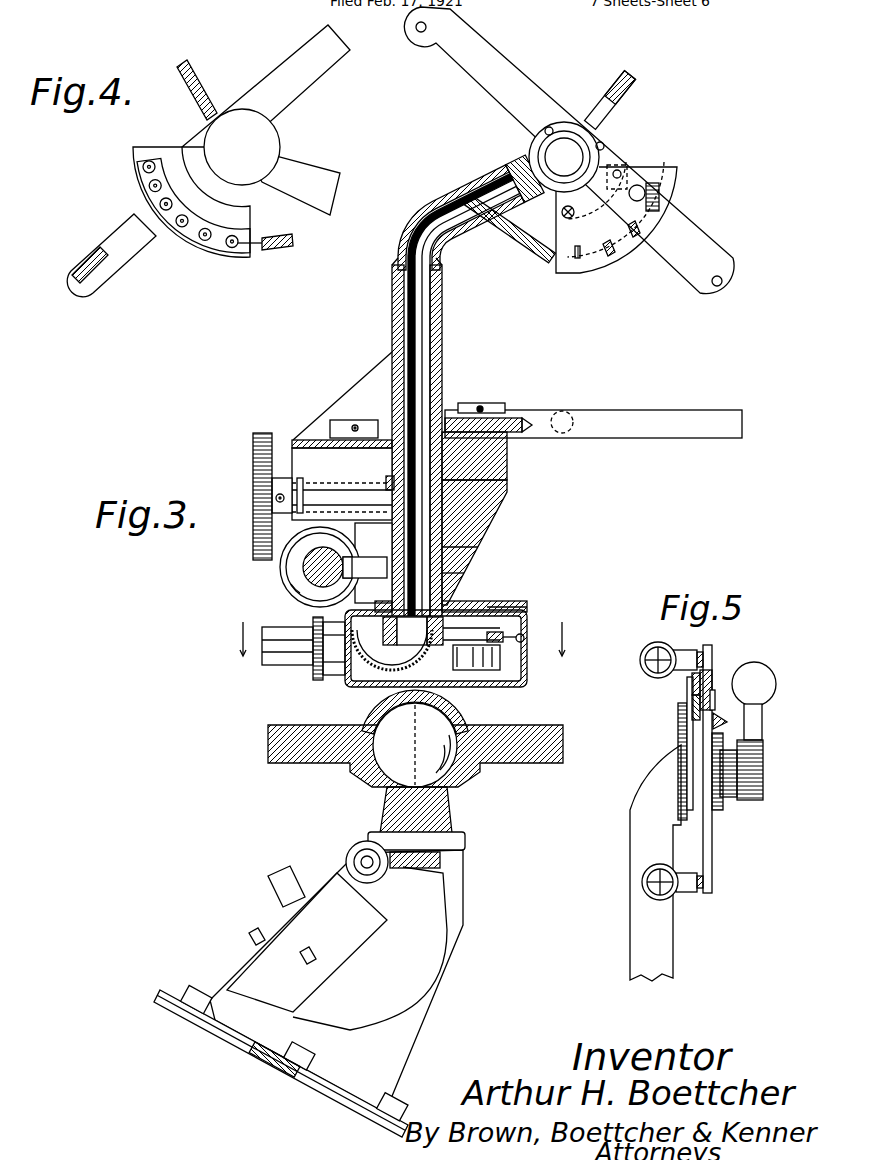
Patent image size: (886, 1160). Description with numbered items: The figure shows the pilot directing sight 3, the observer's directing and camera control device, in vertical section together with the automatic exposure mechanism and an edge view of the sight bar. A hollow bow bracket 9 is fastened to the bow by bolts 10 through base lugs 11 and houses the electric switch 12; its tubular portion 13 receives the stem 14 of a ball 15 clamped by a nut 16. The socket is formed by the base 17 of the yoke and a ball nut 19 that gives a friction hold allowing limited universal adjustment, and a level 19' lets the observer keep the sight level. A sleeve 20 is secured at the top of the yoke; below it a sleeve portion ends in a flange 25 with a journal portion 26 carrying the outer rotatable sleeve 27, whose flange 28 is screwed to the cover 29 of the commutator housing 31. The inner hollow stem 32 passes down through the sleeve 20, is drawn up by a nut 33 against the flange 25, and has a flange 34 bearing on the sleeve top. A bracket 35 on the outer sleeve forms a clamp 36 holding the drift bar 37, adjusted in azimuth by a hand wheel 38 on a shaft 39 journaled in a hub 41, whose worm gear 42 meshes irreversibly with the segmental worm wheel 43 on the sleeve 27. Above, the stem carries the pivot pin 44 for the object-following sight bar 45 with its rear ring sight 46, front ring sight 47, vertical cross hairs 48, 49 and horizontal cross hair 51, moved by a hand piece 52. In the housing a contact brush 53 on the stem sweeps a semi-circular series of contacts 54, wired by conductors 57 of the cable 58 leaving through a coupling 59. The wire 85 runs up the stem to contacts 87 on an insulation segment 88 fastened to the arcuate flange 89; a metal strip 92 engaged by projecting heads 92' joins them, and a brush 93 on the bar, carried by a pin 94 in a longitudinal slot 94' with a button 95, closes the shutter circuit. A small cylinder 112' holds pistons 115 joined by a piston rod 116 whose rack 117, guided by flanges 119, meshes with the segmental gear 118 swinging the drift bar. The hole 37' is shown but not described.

In FIG. 3, the pilot directing sight 3 is at (337, 385).
In FIG. 3, the bow bracket 9 is at (463, 930).
In FIG. 3, the bolts 10 is at (250, 1037).
In FIG. 3, the base lugs 11 is at (383, 1110).
In FIG. 3, the electric switch 12 is at (297, 932).
In FIG. 3, the tubular portion 13 is at (447, 817).
In FIG. 3, the stem 14 is at (255, 640).
In FIG. 3, the ball 15 is at (448, 780).
In FIG. 3, the nut 16 is at (443, 862).
In FIG. 3, the base 17 is at (372, 710).
In FIG. 3, the ball nut 19 is at (415, 759).
In FIG. 3, the level 19' is at (354, 412).
In FIG. 3, the sleeve 20 is at (437, 370).
In FIG. 3, the flange 25 is at (498, 480).
In FIG. 3, the journal portion 26 is at (465, 545).
In FIG. 3, the outer rotatable sleeve 27 is at (453, 568).
In FIG. 3, the flange 28 is at (472, 605).
In FIG. 3, the cover 29 is at (517, 613).
In FIG. 3, the commutator housing 31 is at (525, 678).
In FIG. 3, the inner sleeve or hollow stem 32 is at (433, 322).
In FIG. 3, the nut 33 is at (495, 608).
In FIG. 3, the flange 34 is at (392, 265).
In FIG. 3, the bracket 35 is at (485, 503).
In FIG. 3, the clamp 36 is at (492, 403).
In FIG. 3, the drift or ground direction bar 37 is at (593, 409).
In FIG. 3, the hole 37' is at (564, 405).
In FIG. 3, the hand wheel 38 is at (258, 472).
In FIG. 3, the shaft 39 is at (328, 490).
In FIG. 3, the hub 41 is at (298, 483).
In FIG. 3, the worm gear 42 is at (393, 483).
In FIG. 3, the segmental worm wheel 43 is at (384, 502).
In FIG. 3, the pivot pin 44 is at (566, 157).
In FIG. 3, the object-following sight bar 45 is at (488, 68).
In FIG. 5, the object-following sight bar 45 is at (713, 892).
In FIG. 5, the rear ring sight 46 is at (642, 882).
In FIG. 5, the front ring sight 47 is at (655, 642).
In FIG. 5, the vertical cross hair 48 is at (642, 652).
In FIG. 5, the vertical cross hair 49 is at (680, 662).
In FIG. 5, the horizontal cross hair 51 is at (647, 670).
In FIG. 3, the hand piece 52 is at (621, 103).
In FIG. 5, the hand piece 52 is at (757, 663).
In FIG. 3, the contact brush 53 is at (528, 605).
In FIG. 3, the contacts 54 is at (515, 636).
In FIG. 3, the conductors 57 is at (467, 663).
In FIG. 3, the cable 58 is at (282, 666).
In FIG. 3, the coupling 59 is at (315, 673).
In FIG. 4, the wire 85 is at (276, 251).
In FIG. 3, the wire 85 is at (408, 318).
In FIG. 3, the electrical contacts 87 is at (611, 249).
In FIG. 5, the electrical contacts 87 is at (712, 667).
In FIG. 3, the segment of insulation 88 is at (574, 258).
In FIG. 5, the segment of insulation 88 is at (680, 718).
In FIG. 5, the arcuate flange 89 is at (682, 742).
In FIG. 4, the metal strip 92 is at (193, 214).
In FIG. 4, the projecting head 92' is at (215, 261).
In FIG. 5, the contact brush 93 is at (688, 687).
In FIG. 5, the pin 94 is at (671, 707).
In FIG. 3, the longitudinal slot 94' is at (642, 162).
In FIG. 3, the button 95 is at (653, 190).
In FIG. 5, the button 95 is at (715, 695).
In FIG. 3, the cylinder 112' is at (302, 501).
In FIG. 3, the pistons 115 is at (278, 568).
In FIG. 3, the piston rod 116 is at (310, 567).
In FIG. 3, the rack 117 is at (317, 583).
In FIG. 3, the segmental gear 118 is at (368, 555).
In FIG. 3, the flanges 119 is at (347, 577).